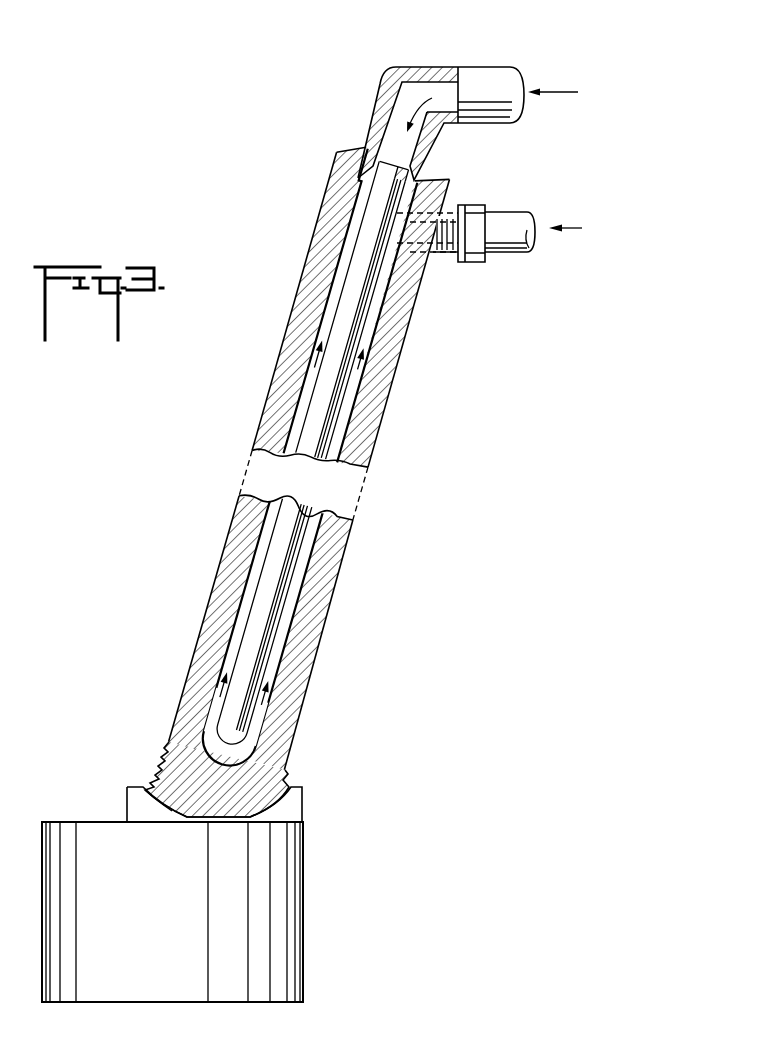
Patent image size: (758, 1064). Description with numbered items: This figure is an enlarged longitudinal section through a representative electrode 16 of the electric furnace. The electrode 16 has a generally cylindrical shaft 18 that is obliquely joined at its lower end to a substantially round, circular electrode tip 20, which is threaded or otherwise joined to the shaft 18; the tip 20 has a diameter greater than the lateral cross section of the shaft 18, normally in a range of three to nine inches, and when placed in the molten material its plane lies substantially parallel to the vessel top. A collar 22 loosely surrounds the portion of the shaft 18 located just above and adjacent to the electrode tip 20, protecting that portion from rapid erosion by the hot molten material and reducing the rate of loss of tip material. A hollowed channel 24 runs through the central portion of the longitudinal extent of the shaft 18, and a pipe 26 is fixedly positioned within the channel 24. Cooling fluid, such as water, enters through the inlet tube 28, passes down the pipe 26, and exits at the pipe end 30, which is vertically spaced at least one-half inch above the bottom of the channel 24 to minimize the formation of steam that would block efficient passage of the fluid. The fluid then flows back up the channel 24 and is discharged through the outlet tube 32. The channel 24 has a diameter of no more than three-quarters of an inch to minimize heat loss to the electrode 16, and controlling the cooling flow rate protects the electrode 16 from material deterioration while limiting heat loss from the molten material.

The electrode 16 is at (365, 583).
The shaft 18 is at (302, 715).
The electrode tip 20 is at (163, 920).
The collar 22 is at (292, 810).
The channel 24 is at (316, 517).
The pipe 26 is at (305, 455).
The inlet tube 28 is at (428, 82).
The pipe end 30 is at (233, 745).
The outlet tube 32 is at (507, 222).